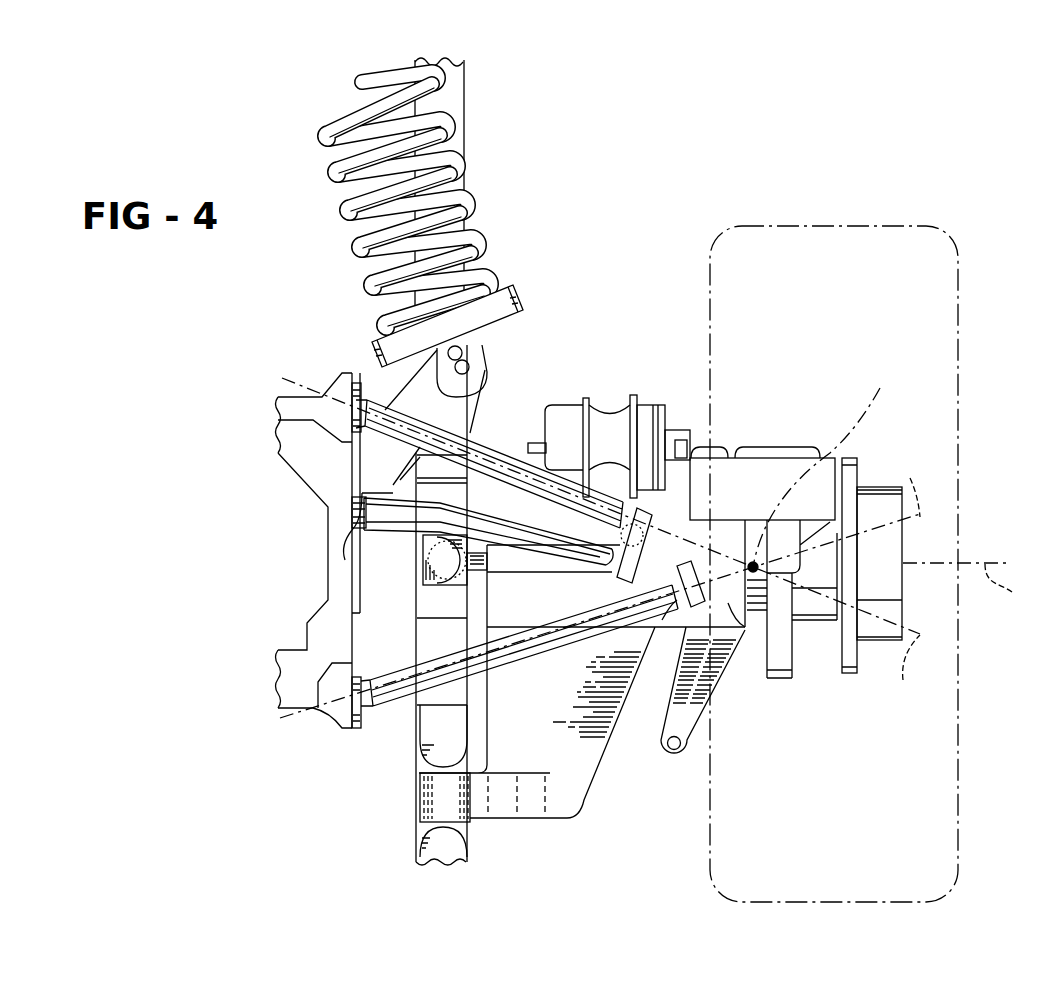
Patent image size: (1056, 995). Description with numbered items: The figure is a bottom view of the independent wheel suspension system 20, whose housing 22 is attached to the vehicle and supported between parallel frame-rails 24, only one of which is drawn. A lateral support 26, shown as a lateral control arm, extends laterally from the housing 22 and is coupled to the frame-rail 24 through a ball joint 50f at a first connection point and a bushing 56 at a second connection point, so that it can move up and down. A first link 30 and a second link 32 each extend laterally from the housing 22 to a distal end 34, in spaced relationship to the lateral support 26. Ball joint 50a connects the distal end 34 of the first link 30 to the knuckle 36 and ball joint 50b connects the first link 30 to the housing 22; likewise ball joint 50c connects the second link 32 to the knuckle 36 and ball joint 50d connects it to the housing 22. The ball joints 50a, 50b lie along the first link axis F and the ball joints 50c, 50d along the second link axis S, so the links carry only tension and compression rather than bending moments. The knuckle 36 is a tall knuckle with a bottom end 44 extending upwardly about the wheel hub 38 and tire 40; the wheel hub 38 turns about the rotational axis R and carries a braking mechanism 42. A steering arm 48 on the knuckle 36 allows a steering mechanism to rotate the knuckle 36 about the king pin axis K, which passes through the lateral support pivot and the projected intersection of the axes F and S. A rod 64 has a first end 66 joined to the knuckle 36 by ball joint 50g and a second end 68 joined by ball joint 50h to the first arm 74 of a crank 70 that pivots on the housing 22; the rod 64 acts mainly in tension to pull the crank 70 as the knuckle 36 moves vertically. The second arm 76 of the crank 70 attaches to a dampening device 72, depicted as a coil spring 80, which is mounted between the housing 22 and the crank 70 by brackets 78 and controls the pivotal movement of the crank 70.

The independent wheel suspension system 20 is at (865, 190).
The housing 22 is at (290, 477).
The frame-rail 24 is at (457, 461).
The lateral support 26 is at (605, 760).
The first link 30 is at (490, 682).
The second link 32 is at (487, 447).
The distal end 34 is at (672, 630).
The knuckle 36 is at (728, 603).
The wheel hub 38 is at (903, 533).
The tire 40 is at (959, 690).
The braking mechanism 42 is at (571, 400).
The bottom end 44 is at (725, 535).
The steering arm 48 is at (713, 693).
The ball joint 50a is at (643, 543).
The ball joint 50b is at (373, 710).
The ball joint 50c is at (667, 483).
The ball joint 50d is at (370, 395).
The ball joint 50f is at (433, 576).
The ball joint 50g is at (633, 556).
The ball joint 50h is at (357, 503).
The bushing 56 is at (427, 797).
The rod 64 is at (407, 527).
The first end 66 is at (555, 572).
The second end 68 is at (380, 527).
The crank 70 is at (416, 404).
The dampening device 72 is at (446, 200).
The first arm 74 is at (447, 481).
The second arm 76 is at (462, 395).
The bracket 78 is at (522, 305).
The coil spring 80 is at (458, 157).
The king pin axis K is at (821, 463).
The first link axis F is at (600, 548).
The rotational axis R is at (964, 589).
The second link axis S is at (907, 672).